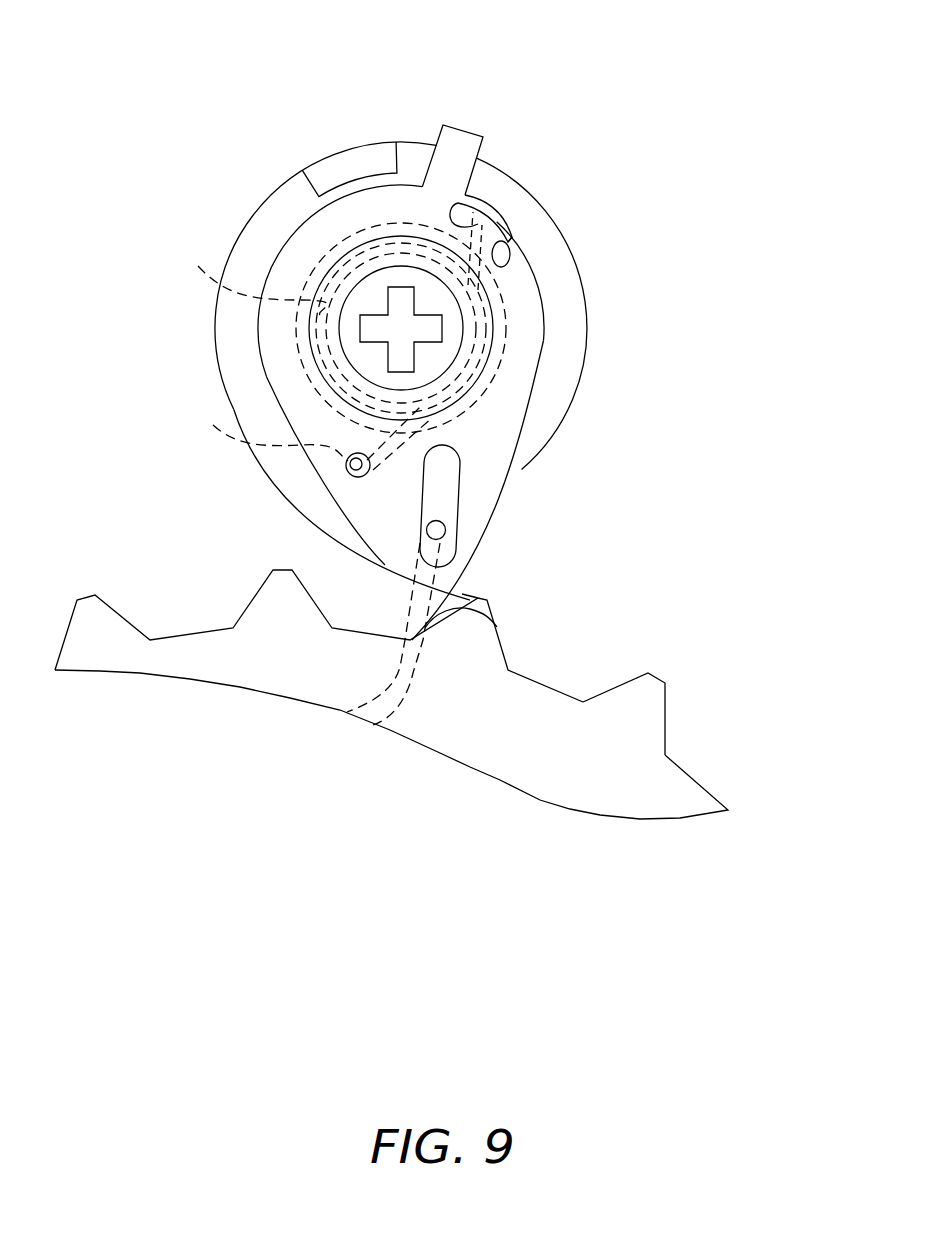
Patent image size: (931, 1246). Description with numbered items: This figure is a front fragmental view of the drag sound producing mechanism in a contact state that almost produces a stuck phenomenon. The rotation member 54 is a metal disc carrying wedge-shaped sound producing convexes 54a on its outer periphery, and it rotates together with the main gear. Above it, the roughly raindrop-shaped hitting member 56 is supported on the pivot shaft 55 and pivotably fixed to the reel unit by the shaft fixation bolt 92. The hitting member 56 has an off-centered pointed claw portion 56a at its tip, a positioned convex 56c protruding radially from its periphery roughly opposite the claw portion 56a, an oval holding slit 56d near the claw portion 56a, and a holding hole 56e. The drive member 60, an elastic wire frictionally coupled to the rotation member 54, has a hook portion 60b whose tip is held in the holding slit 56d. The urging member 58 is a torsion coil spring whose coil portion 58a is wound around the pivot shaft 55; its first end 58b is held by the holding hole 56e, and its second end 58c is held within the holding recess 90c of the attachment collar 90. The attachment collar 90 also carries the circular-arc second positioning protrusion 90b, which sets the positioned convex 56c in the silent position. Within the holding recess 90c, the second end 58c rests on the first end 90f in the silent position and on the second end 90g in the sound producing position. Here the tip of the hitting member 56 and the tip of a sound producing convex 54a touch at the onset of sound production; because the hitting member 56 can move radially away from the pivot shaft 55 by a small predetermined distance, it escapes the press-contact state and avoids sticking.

The rotation member 54 is at (636, 668).
The sound producing convexes 54a is at (653, 698).
The pivot shaft 55 is at (343, 257).
The hitting member 56 is at (512, 531).
The claw portion 56a is at (463, 593).
The positioned convex 56c is at (452, 140).
The holding slit 56d is at (438, 488).
The holding hole 56e is at (357, 477).
The urging member 58 is at (483, 375).
The coil portion 58a is at (232, 279).
The first end 58b is at (293, 436).
The second end 58c is at (513, 234).
The drive member 60 is at (420, 715).
The hook portion 60b is at (467, 608).
The attachment collar 90 is at (543, 191).
The second positioning protrusion 90b is at (347, 162).
The holding recess 90c is at (512, 232).
The first end 90f is at (472, 195).
The second end 90g is at (497, 272).
The shaft fixation bolt 92 is at (452, 339).